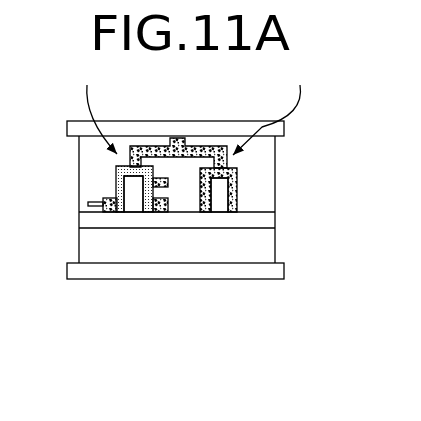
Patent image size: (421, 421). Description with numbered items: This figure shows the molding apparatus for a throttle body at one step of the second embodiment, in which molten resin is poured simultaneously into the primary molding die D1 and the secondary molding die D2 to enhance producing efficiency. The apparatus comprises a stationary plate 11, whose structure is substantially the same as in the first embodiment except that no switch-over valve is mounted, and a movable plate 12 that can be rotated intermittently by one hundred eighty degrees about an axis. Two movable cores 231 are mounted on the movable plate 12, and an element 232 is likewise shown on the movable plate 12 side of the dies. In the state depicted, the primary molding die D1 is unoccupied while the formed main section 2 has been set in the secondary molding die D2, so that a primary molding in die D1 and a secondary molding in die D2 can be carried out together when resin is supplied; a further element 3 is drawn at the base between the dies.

The main section 2 is at (118, 212).
The electrode bump 3 is at (157, 212).
The stationary plate 11 is at (262, 188).
The movable plate 12 is at (238, 247).
The movable core 231 is at (216, 190).
The second coating cap 232 is at (133, 193).
The primary molding die D1 is at (279, 104).
The secondary molding die D2 is at (97, 104).